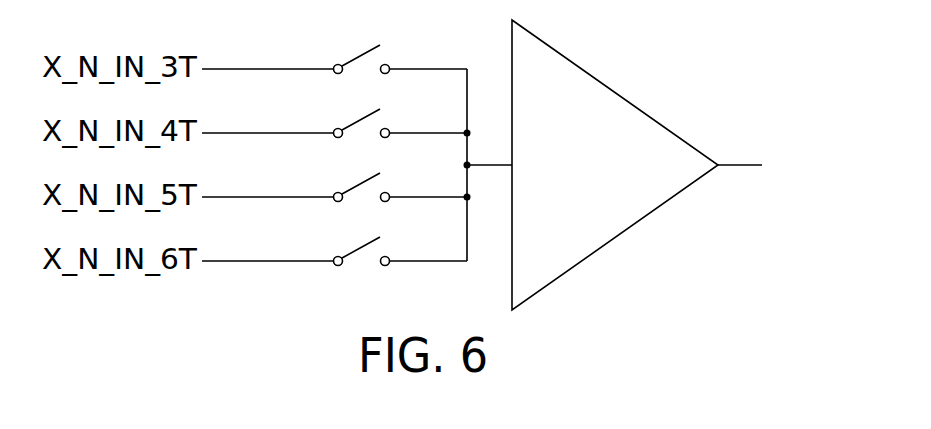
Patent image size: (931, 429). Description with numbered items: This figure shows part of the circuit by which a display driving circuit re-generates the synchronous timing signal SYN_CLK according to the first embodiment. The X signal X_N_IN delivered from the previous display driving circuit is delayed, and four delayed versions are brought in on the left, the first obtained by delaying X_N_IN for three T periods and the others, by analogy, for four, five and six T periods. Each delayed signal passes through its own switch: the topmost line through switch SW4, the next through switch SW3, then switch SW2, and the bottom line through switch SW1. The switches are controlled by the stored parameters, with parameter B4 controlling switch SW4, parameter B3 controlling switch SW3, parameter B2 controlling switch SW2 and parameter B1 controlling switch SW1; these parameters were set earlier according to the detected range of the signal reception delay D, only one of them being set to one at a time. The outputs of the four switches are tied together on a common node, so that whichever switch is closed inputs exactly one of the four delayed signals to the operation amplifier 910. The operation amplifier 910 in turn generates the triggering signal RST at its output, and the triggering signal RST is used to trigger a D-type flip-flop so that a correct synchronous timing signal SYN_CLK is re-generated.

The operation amplifier 910 is at (613, 92).
The switch SW1 is at (401, 279).
The switch SW2 is at (401, 215).
The switch SW3 is at (401, 151).
The switch SW4 is at (401, 87).
The parameter B1 is at (334, 240).
The parameter B2 is at (334, 176).
The parameter B3 is at (334, 112).
The parameter B4 is at (334, 48).
The triggering signal RST is at (771, 167).